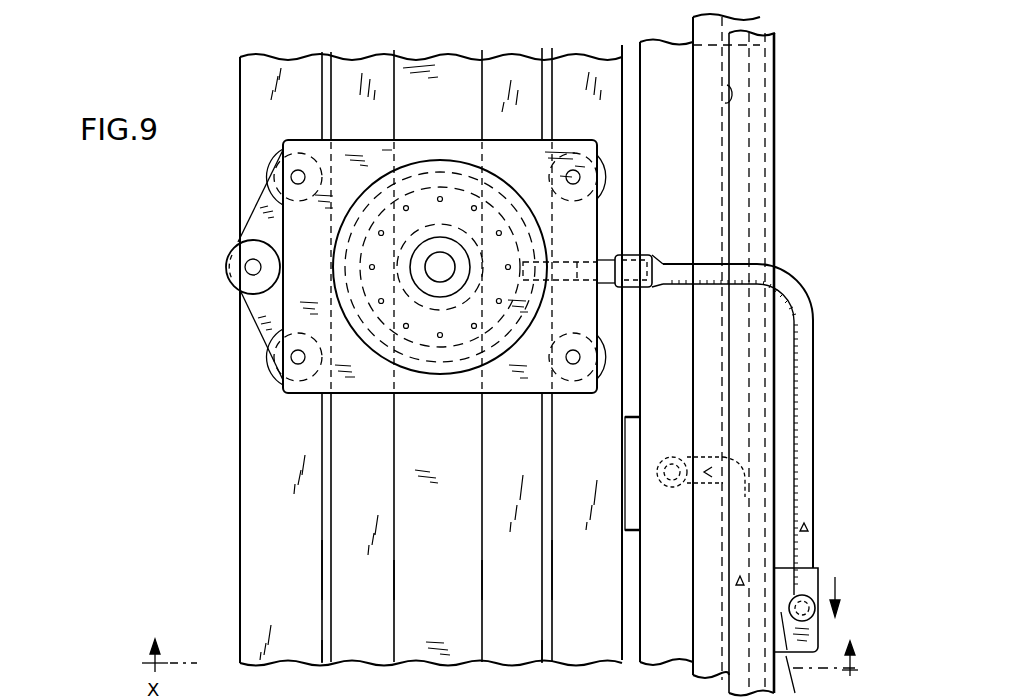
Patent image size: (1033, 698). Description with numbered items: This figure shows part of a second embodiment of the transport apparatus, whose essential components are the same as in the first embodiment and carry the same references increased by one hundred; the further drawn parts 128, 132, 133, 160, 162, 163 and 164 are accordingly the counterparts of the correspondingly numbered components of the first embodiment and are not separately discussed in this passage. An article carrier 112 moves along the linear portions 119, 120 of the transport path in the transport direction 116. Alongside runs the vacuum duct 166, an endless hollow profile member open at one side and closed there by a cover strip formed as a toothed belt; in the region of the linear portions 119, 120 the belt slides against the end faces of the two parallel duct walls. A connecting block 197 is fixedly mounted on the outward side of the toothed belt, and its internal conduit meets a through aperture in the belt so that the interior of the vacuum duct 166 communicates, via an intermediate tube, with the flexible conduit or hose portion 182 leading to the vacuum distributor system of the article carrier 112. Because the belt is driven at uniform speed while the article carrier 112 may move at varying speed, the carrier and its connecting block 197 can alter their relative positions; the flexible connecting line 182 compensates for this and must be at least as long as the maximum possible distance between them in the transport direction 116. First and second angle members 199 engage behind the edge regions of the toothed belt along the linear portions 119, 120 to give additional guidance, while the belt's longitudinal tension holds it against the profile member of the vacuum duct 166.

The article carrier 112 is at (350, 133).
The transport direction 116 is at (442, 407).
The linear portion of the transport path 119 is at (224, 447).
The linear portion of the transport path 120 is at (382, 355).
The board joint 128 is at (345, 572).
The panel edge 132 is at (250, 520).
The board 133 is at (474, 576).
The fastener holes 160 is at (472, 205).
The board 162 is at (548, 669).
The board 163 is at (318, 669).
The board 164 is at (598, 688).
The vacuum duct 166 is at (727, 85).
The flexible conduit or hose portion 182 is at (812, 338).
The connecting block 197 is at (818, 580).
The angle members 199 is at (773, 53).